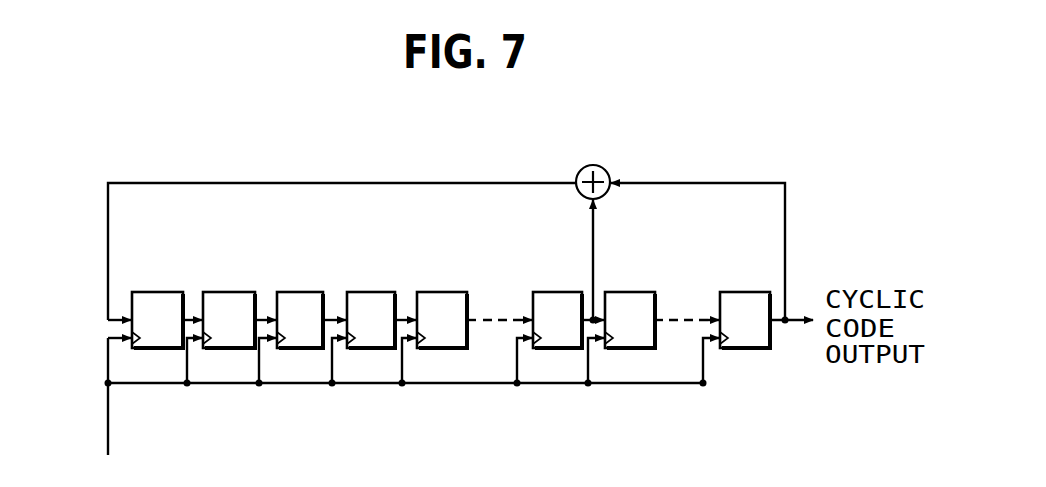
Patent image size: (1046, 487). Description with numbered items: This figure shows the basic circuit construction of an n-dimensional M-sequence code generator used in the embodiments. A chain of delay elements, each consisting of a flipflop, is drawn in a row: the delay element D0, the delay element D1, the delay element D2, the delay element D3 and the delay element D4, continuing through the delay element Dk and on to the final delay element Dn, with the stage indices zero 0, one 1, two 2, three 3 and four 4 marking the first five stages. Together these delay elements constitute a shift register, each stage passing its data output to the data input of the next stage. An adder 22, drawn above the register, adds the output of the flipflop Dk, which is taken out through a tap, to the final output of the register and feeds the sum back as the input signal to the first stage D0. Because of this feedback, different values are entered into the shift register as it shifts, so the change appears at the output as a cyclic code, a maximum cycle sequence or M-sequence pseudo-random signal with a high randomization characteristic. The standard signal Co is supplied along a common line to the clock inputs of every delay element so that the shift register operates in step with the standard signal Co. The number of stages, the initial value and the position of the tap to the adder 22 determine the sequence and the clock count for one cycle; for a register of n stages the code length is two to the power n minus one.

The adder 22 is at (582, 195).
The delay element D0 is at (157, 320).
The delay element D1 is at (229, 320).
The delay element D2 is at (300, 320).
The delay element D3 is at (371, 320).
The delay element D4 is at (442, 320).
The delay element Dk is at (557, 320).
The delay element Dn is at (745, 320).
The flip-flop D0 0 is at (157, 320).
The flip-flop D1 1 is at (229, 320).
The flip-flop D2 2 is at (300, 320).
The flip-flop D3 3 is at (371, 320).
The flip-flop D4 4 is at (442, 320).
The standard signal Co is at (108, 433).